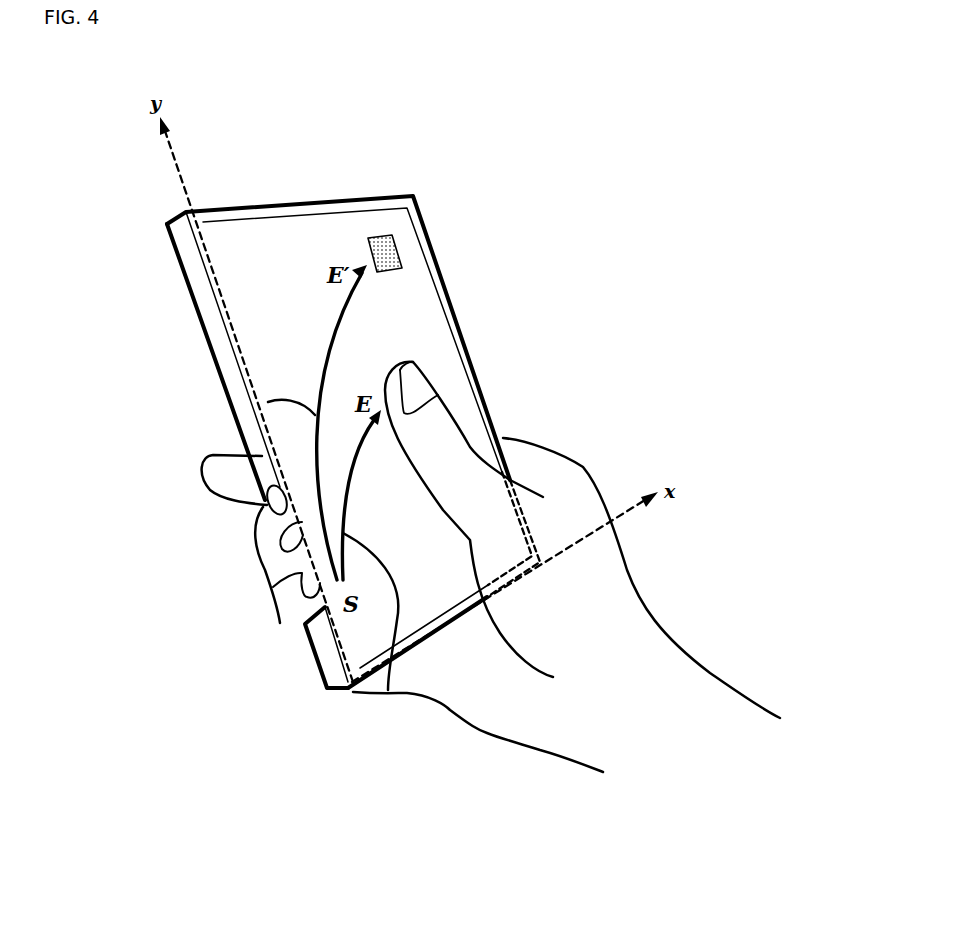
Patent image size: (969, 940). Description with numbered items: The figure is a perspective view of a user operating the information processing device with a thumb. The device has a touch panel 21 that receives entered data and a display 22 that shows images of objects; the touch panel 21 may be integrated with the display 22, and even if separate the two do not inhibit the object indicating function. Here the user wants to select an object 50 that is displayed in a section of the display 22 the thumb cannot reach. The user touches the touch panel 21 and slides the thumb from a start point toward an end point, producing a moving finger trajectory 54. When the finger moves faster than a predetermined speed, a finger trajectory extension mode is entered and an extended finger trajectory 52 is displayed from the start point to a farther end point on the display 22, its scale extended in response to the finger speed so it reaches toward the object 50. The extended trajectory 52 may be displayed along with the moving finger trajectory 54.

The touch panel 21 is at (257, 243).
The display 22 is at (443, 303).
The object 50 is at (398, 247).
The extended finger trajectory 52 is at (257, 408).
The moving finger trajectory 54 is at (389, 692).